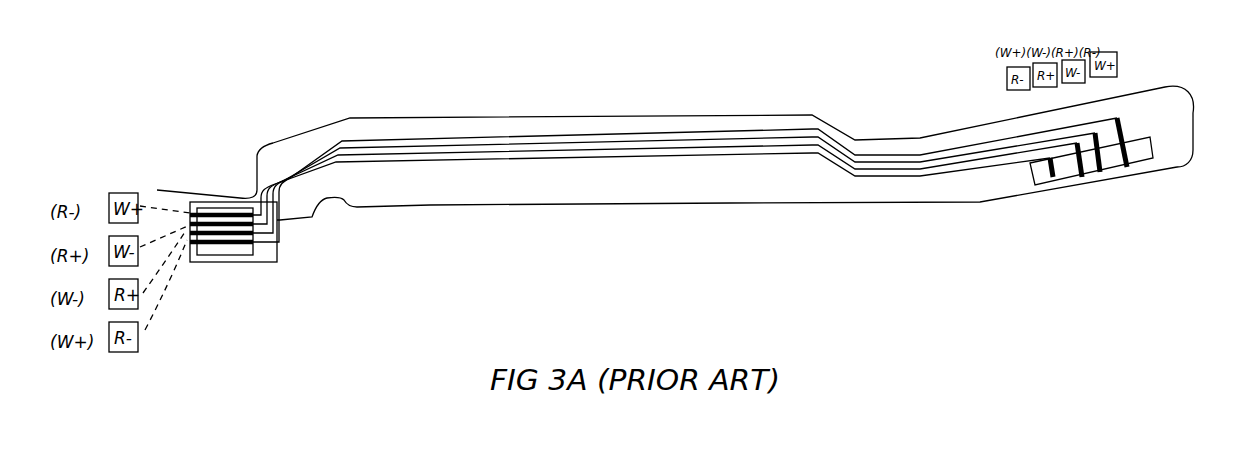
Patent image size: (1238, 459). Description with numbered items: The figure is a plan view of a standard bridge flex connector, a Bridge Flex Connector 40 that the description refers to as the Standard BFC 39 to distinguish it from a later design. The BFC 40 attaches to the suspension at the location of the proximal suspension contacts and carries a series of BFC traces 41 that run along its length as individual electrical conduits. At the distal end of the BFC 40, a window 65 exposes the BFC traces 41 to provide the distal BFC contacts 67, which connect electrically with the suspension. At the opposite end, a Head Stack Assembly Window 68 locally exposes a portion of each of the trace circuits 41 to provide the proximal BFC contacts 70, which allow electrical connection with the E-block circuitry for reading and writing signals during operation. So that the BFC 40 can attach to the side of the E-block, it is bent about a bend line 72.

The Standard BFC 39 is at (708, 100).
The Bridge Flex Connector 40 is at (622, 118).
The BFC traces 41 is at (532, 155).
The window 65 is at (1147, 137).
The distal BFC contacts 67 is at (1053, 178).
The Head Stack Assembly Window 68 is at (240, 263).
The proximal BFC contacts 70 is at (247, 162).
The bend line 72 is at (328, 210).